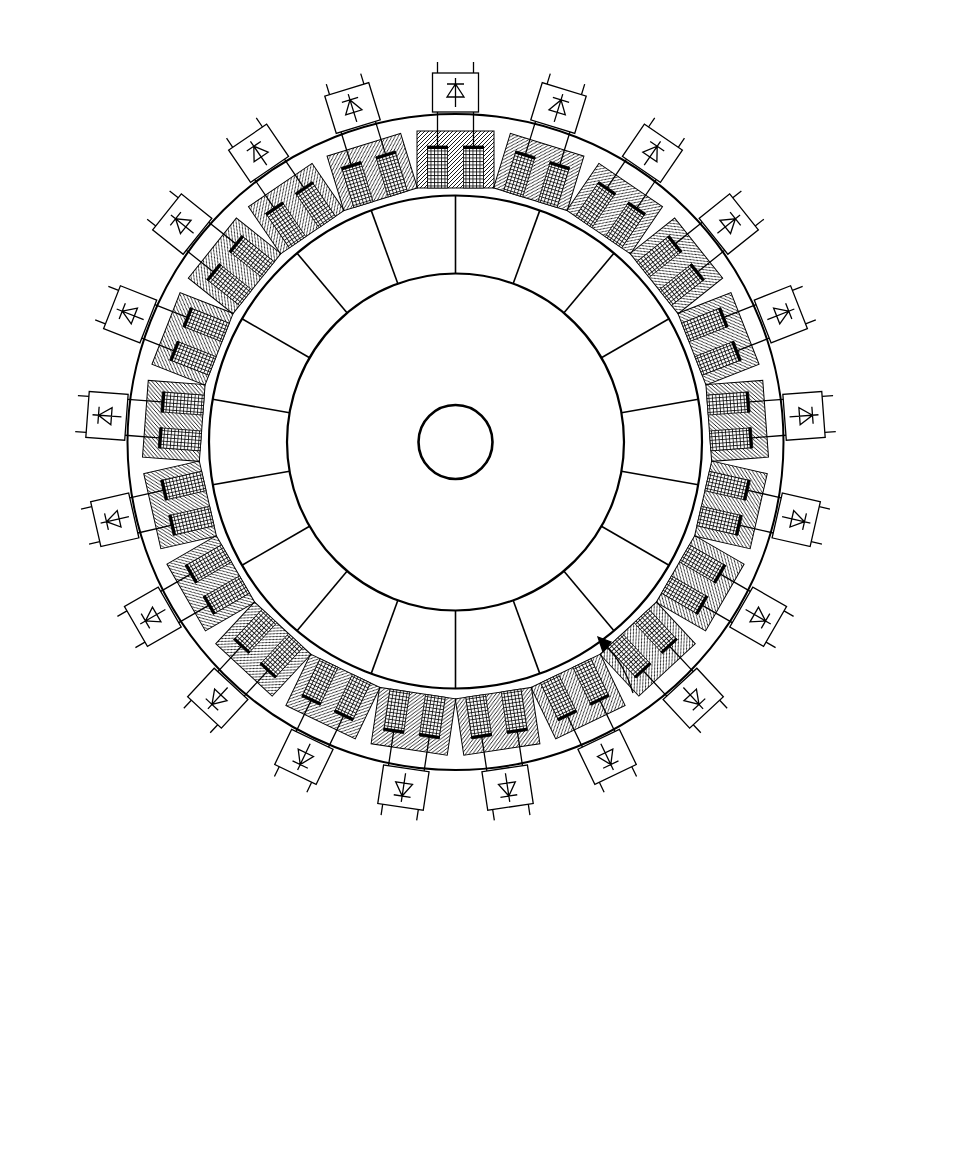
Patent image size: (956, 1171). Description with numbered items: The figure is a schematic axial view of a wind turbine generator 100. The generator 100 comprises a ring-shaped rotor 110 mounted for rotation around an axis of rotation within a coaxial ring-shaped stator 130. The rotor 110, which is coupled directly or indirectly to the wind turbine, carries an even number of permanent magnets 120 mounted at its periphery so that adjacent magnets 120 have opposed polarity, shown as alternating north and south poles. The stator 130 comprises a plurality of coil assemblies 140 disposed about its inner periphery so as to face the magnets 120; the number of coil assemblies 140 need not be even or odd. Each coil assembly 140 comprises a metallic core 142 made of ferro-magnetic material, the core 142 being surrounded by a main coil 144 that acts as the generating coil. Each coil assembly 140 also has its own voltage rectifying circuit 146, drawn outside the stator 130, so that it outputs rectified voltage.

The wind turbine generator 100 is at (652, 93).
The rotor 110 is at (492, 441).
The permanent magnets 120 is at (632, 492).
The stator 130 is at (345, 755).
The coil assemblies 140 is at (427, 448).
The metallic core 142 is at (170, 507).
The main coil 144 is at (187, 483).
The voltage rectifying circuit 146 is at (535, 100).